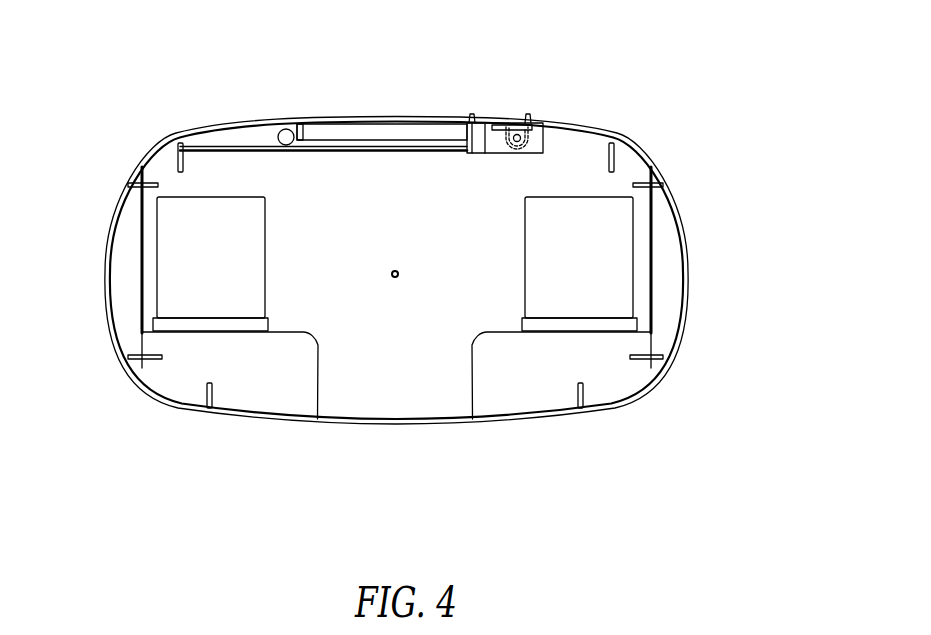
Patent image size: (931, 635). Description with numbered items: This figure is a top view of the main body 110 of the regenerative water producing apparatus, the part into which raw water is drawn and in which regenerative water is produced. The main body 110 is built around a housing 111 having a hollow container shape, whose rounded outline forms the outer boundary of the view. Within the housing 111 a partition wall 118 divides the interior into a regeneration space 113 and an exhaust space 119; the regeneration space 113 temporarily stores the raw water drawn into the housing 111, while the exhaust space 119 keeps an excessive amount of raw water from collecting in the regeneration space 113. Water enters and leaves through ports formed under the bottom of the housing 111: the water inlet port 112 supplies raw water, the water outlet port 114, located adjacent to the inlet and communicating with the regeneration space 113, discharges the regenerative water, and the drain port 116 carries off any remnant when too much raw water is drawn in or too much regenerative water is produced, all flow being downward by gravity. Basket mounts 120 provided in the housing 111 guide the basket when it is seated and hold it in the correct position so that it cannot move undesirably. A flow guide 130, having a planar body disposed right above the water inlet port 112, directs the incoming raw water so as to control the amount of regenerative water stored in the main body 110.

The main body 110 is at (95, 70).
The housing 111 is at (688, 216).
The water inlet port 112 is at (533, 140).
The regeneration space 113 is at (366, 358).
The water outlet port 114 is at (395, 277).
The drain port 116 is at (265, 128).
The partition wall 118 is at (218, 130).
The exhaust space 119 is at (327, 126).
The basket mounts 120 is at (612, 160).
The flow guide 130 is at (493, 155).